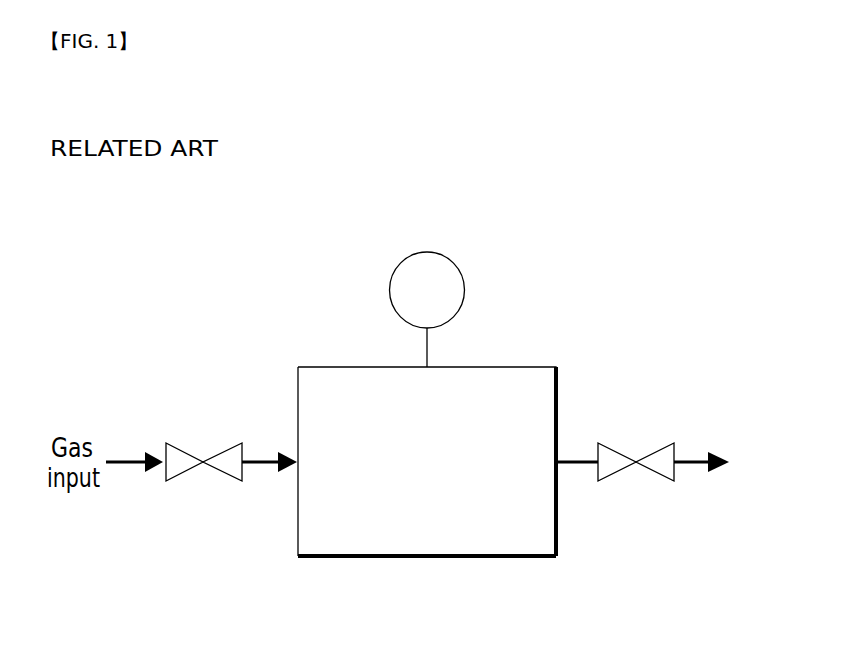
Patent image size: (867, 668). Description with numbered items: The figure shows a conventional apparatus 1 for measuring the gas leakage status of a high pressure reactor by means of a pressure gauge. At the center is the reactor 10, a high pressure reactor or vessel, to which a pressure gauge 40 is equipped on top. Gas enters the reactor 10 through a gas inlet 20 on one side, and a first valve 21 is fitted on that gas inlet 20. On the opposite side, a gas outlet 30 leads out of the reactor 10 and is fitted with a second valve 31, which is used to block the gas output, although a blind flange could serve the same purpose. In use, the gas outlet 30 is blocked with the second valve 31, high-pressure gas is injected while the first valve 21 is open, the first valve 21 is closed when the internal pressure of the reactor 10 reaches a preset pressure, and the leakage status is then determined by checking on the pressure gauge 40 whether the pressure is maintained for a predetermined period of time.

The conventional apparatus for gas leakage measurement 1 is at (212, 252).
The reactor 10 is at (428, 559).
The gas inlet 20 is at (263, 458).
The first valve 21 is at (188, 474).
The gas outlet 30 is at (578, 460).
The second valve 31 is at (652, 477).
The pressure gauge 40 is at (390, 290).